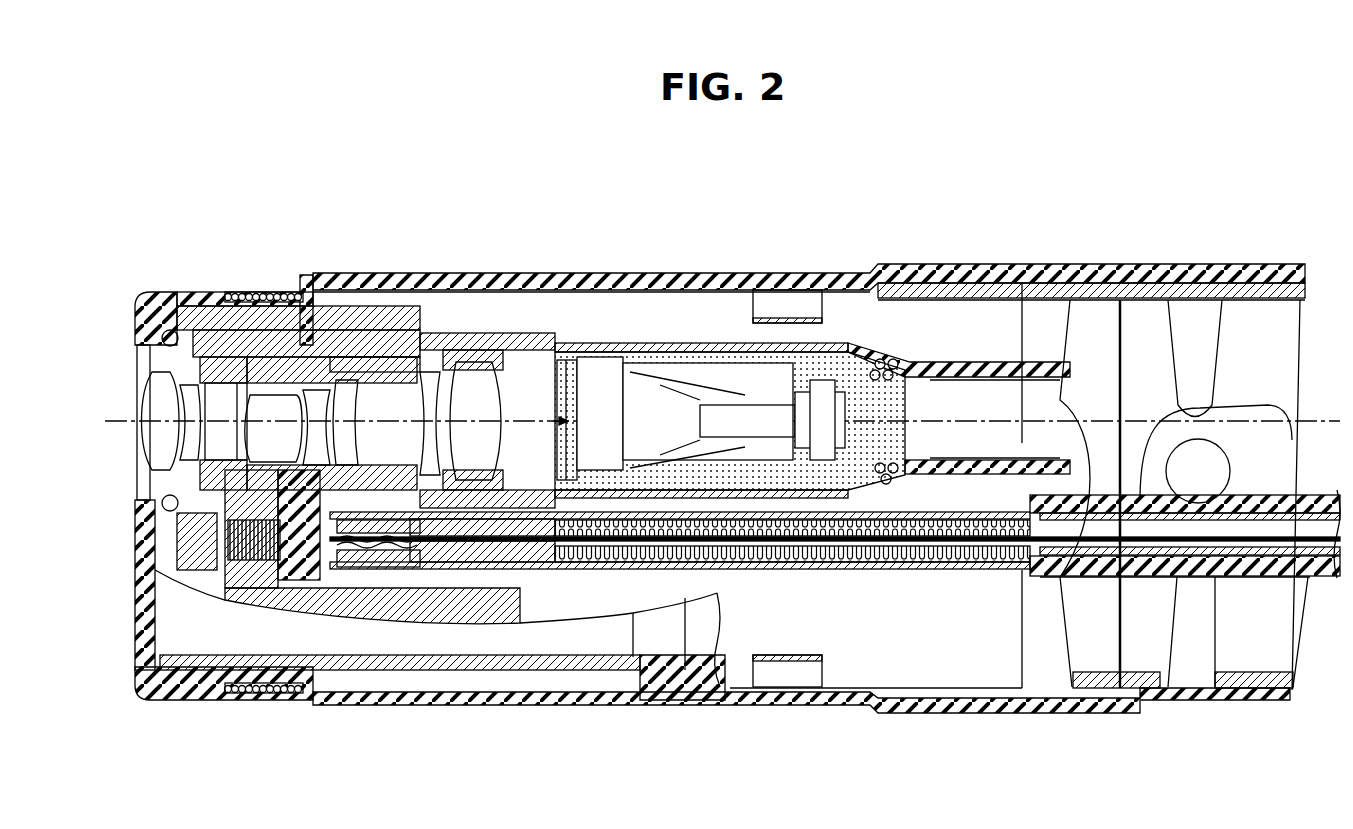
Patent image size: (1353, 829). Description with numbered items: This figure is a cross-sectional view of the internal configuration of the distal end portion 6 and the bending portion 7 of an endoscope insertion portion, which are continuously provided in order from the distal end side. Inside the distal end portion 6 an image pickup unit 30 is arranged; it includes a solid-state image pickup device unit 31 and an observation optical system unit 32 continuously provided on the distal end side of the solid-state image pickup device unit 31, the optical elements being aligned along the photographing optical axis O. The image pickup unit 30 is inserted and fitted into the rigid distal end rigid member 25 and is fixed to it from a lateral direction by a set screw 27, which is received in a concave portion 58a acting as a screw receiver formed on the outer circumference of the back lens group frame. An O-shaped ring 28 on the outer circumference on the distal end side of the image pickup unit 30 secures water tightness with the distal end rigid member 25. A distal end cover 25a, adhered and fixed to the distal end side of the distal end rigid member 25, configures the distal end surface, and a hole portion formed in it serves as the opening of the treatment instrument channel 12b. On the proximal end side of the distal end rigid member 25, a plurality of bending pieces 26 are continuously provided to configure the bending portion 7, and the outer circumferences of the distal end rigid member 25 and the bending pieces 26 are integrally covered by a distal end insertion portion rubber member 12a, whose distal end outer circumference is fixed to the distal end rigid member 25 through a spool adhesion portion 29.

The distal end portion 6 is at (619, 240).
The bending portion 7 is at (1187, 240).
The distal end insertion portion rubber member 12a is at (669, 283).
The treatment instrument channel 12b is at (263, 652).
The distal end rigid member 25 is at (380, 300).
The distal end cover 25a is at (150, 294).
The bending pieces 26 is at (1258, 294).
The set screw 27 is at (293, 300).
The O-shaped ring 28 is at (176, 331).
The spool adhesion portion 29 is at (262, 294).
The image pickup unit 30 is at (571, 317).
The solid-state image pickup device unit 31 is at (725, 327).
The observation optical system unit 32 is at (477, 328).
The concave portion 58a is at (231, 305).
The photographing optical axis O is at (121, 421).